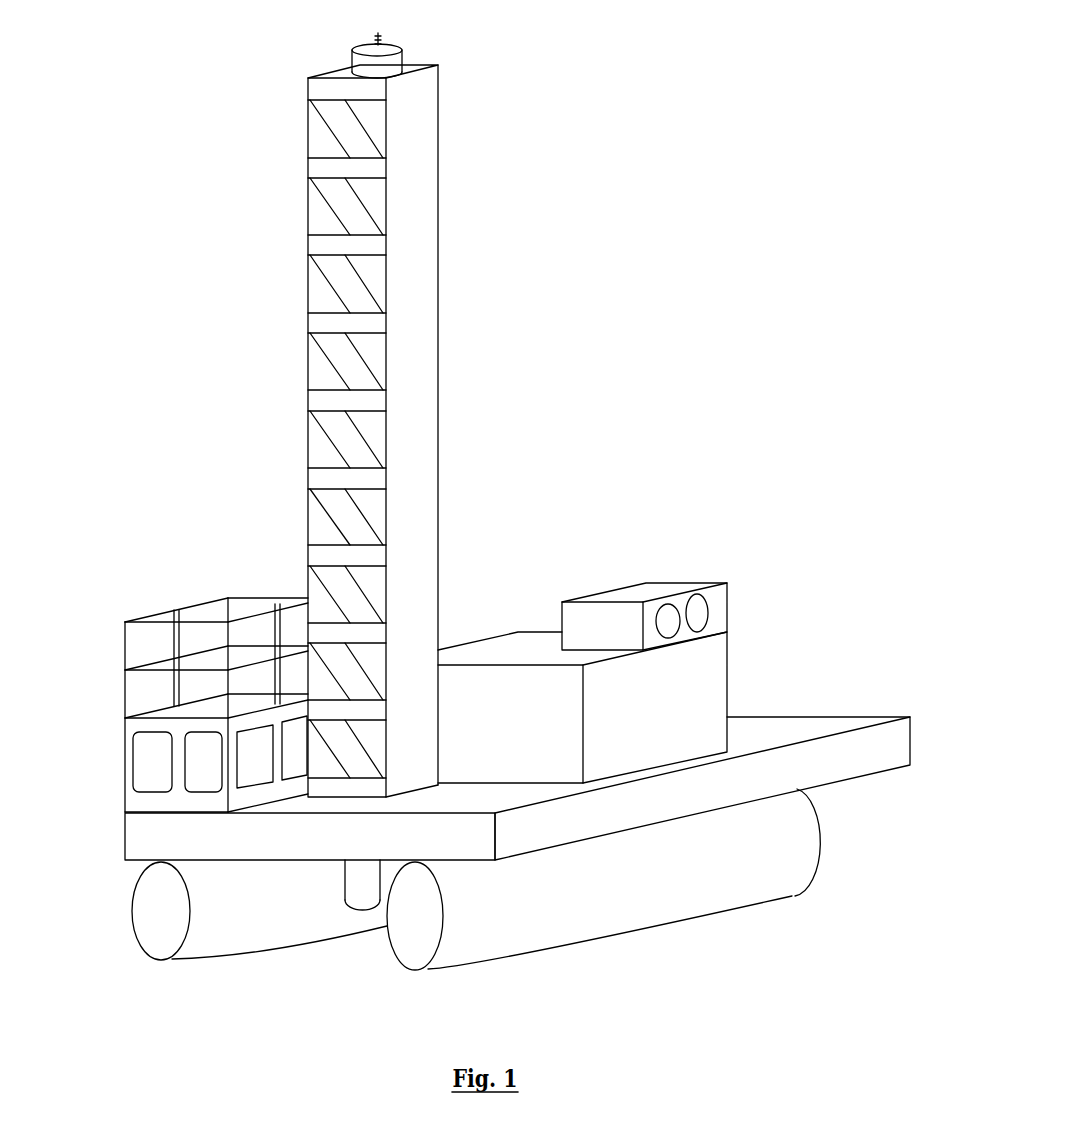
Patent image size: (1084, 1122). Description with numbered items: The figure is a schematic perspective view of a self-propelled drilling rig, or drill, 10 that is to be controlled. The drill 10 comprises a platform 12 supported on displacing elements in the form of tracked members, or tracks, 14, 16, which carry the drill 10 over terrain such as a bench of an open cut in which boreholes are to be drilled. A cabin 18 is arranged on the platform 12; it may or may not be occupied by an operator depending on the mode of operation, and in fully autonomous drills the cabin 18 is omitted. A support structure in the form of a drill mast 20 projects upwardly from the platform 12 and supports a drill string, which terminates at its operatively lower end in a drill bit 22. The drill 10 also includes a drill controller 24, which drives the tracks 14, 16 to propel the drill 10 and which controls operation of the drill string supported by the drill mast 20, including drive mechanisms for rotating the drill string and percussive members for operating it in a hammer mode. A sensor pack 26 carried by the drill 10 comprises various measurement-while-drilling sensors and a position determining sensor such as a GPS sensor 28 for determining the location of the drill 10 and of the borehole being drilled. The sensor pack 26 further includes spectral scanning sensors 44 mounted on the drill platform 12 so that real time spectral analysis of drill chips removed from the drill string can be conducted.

The self-propelled drilling rig 10 is at (672, 400).
The platform 12 is at (875, 763).
The tracked member 14 is at (140, 935).
The tracked member 16 is at (555, 957).
The cabin 18 is at (176, 705).
The drill mast 20 is at (422, 357).
The drill bit 22 is at (358, 910).
The drill controller 24 is at (718, 675).
The sensor pack 26 is at (672, 585).
The GPS sensor 28 is at (400, 53).
The spectral scanning sensors 44 is at (710, 605).